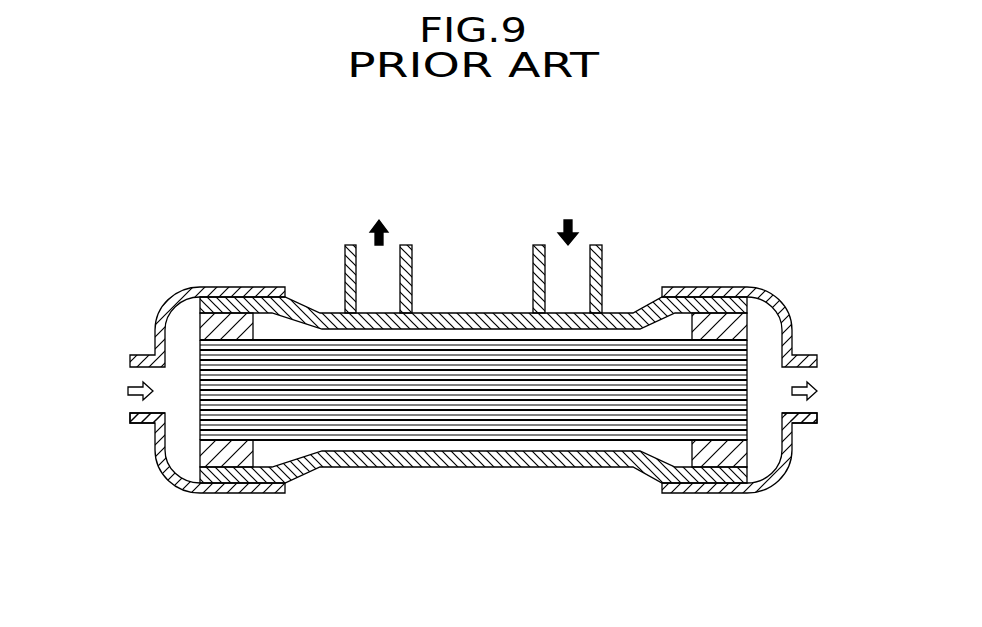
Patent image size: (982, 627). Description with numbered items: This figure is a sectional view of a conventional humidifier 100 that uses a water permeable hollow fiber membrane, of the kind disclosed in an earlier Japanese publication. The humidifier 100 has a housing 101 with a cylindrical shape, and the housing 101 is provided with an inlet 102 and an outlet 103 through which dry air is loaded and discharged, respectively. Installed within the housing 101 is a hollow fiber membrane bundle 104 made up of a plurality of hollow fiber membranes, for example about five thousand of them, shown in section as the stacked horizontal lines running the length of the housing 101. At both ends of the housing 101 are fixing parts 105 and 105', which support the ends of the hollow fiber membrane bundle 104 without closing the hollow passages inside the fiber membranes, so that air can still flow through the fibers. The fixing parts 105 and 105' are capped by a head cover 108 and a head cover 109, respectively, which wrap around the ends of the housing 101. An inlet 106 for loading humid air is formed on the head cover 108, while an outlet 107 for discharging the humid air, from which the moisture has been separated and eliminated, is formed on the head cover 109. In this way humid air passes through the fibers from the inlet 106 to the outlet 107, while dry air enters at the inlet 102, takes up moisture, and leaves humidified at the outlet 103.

The humidifier 100 is at (471, 232).
The housing 101 is at (408, 468).
The inlet 102 is at (602, 249).
The outlet 103 is at (345, 248).
The hollow fiber membrane bundle 104 is at (548, 415).
The fixing part 105 is at (228, 423).
The fixing part 105' is at (711, 422).
The inlet 106 is at (148, 425).
The outlet 107 is at (798, 426).
The head cover 108 is at (173, 293).
The head cover 109 is at (771, 294).